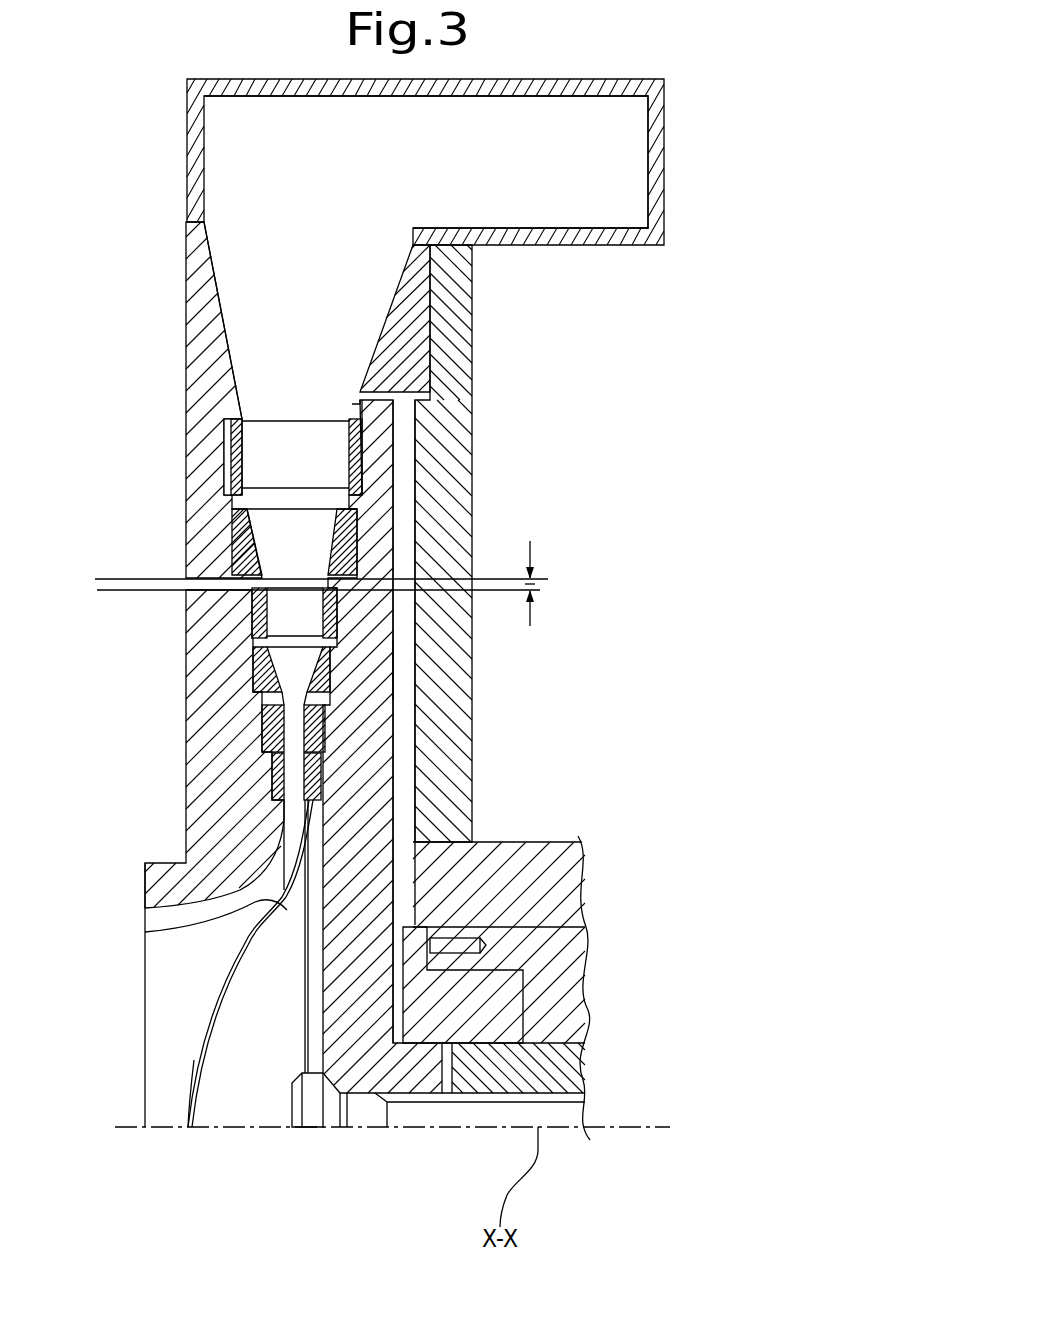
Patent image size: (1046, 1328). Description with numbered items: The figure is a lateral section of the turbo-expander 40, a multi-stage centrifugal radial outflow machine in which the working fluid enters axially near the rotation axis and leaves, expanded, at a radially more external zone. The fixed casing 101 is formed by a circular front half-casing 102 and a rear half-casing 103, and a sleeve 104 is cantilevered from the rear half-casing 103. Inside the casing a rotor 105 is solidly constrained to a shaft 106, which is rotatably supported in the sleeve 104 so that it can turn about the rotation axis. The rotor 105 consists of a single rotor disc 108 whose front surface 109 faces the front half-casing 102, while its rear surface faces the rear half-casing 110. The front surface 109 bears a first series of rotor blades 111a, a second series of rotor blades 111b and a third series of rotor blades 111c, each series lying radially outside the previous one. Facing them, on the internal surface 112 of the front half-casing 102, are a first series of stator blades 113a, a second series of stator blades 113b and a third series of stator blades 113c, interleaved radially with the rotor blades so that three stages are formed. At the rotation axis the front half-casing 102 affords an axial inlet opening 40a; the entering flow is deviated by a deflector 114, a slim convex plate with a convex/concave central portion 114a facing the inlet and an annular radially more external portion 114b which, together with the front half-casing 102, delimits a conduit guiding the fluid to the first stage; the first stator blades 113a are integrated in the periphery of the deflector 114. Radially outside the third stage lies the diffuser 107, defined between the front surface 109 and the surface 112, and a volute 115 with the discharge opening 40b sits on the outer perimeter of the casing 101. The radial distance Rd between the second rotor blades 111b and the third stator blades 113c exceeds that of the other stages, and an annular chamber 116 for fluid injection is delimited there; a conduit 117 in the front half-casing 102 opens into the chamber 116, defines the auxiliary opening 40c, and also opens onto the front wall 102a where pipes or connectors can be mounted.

The volute 115 is at (625, 145).
The discharge opening 40b is at (322, 238).
The front half-casing 102 is at (183, 328).
The internal surface 112 is at (228, 327).
The front wall 102a is at (186, 546).
The third series of rotor blades 111c is at (285, 458).
The third series of stator blades 113c is at (295, 619).
The second series of rotor blades 111b is at (293, 664).
The second series of stator blades 113b is at (292, 723).
The first series of rotor blades 111a is at (293, 777).
The first series of stator blades 113a is at (295, 798).
The annular chamber 116 is at (335, 580).
The front surface 109 is at (347, 405).
The rotor disc 108 is at (385, 493).
The diffuser 107 is at (425, 303).
The rear half-casing 103 is at (478, 405).
The fixed casing 101 is at (514, 357).
The rotor 105 is at (472, 615).
The rear half-casing 110 is at (472, 672).
The auxiliary opening 40c is at (183, 580).
The conduit 117 is at (113, 578).
The radial distance Rd is at (532, 582).
The turbo-expander 40 is at (692, 578).
The sleeve 104 is at (542, 838).
The shaft 106 is at (580, 1047).
The deflector 114 is at (203, 1030).
The annular radially more external portion 114b is at (205, 930).
The convex/concave central portion 114a is at (190, 1075).
The axial inlet opening 40a is at (170, 1105).